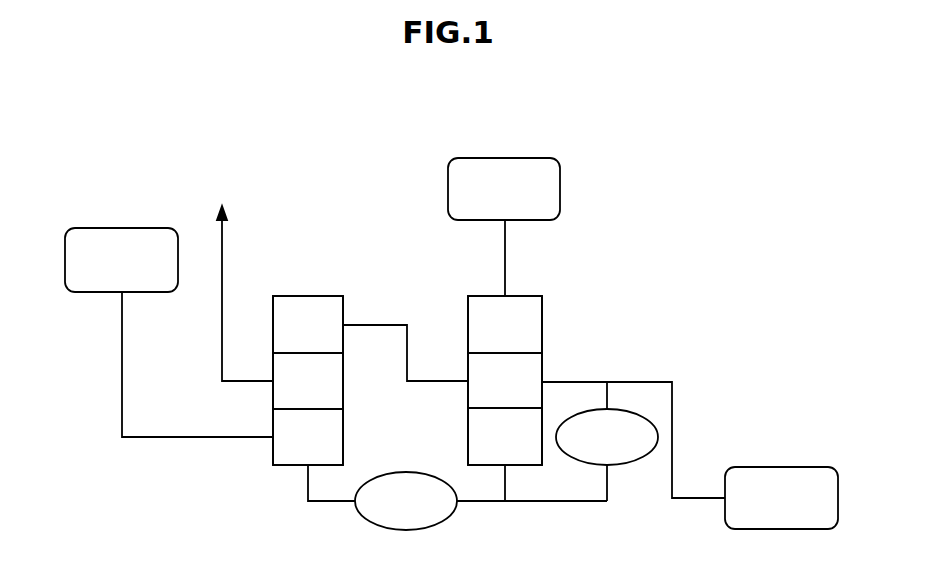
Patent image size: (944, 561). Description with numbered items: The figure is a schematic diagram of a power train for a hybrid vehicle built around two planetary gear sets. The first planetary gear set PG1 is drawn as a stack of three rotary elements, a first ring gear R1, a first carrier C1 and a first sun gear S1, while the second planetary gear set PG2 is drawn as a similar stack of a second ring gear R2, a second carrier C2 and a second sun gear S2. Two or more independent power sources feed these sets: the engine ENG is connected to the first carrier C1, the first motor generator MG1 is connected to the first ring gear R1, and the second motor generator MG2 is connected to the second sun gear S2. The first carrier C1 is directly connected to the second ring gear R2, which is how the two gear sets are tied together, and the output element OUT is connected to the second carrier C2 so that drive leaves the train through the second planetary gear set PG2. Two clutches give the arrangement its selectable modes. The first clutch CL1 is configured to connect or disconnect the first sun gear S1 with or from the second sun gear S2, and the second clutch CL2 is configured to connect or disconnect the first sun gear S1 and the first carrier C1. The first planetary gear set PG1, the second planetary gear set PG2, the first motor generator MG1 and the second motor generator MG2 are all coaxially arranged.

The first motor generator MG1 is at (504, 227).
The second motor generator MG2 is at (169, 332).
The engine ENG is at (690, 455).
The output element OUT is at (237, 282).
The first planetary gear set PG1 is at (549, 320).
The second planetary gear set PG2 is at (307, 293).
The first ring gear R1 is at (505, 324).
The first carrier C1 is at (537, 381).
The first sun gear S1 is at (505, 454).
The second ring gear R2 is at (370, 338).
The second carrier C2 is at (308, 381).
The second sun gear S2 is at (314, 455).
The first clutch CL1 is at (481, 501).
The second clutch CL2 is at (607, 455).